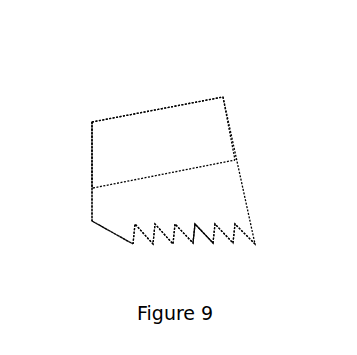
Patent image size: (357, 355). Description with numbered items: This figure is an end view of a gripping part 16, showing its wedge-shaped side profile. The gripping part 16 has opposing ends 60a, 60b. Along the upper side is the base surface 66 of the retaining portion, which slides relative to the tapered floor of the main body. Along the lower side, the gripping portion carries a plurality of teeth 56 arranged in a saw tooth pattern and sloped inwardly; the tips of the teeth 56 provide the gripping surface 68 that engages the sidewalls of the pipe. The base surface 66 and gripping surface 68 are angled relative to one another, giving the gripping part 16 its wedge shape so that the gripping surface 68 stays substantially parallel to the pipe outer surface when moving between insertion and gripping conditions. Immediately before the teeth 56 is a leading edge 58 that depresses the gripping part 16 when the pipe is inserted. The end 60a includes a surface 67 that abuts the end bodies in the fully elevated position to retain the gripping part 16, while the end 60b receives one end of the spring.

The gripping part 16 is at (203, 130).
The base surface 66 is at (167, 106).
The surface 67 is at (92, 138).
The end 60a is at (92, 166).
The end 60b is at (232, 145).
The leading edge 58 is at (113, 220).
The teeth 56 is at (169, 238).
The gripping surface 68 is at (202, 245).